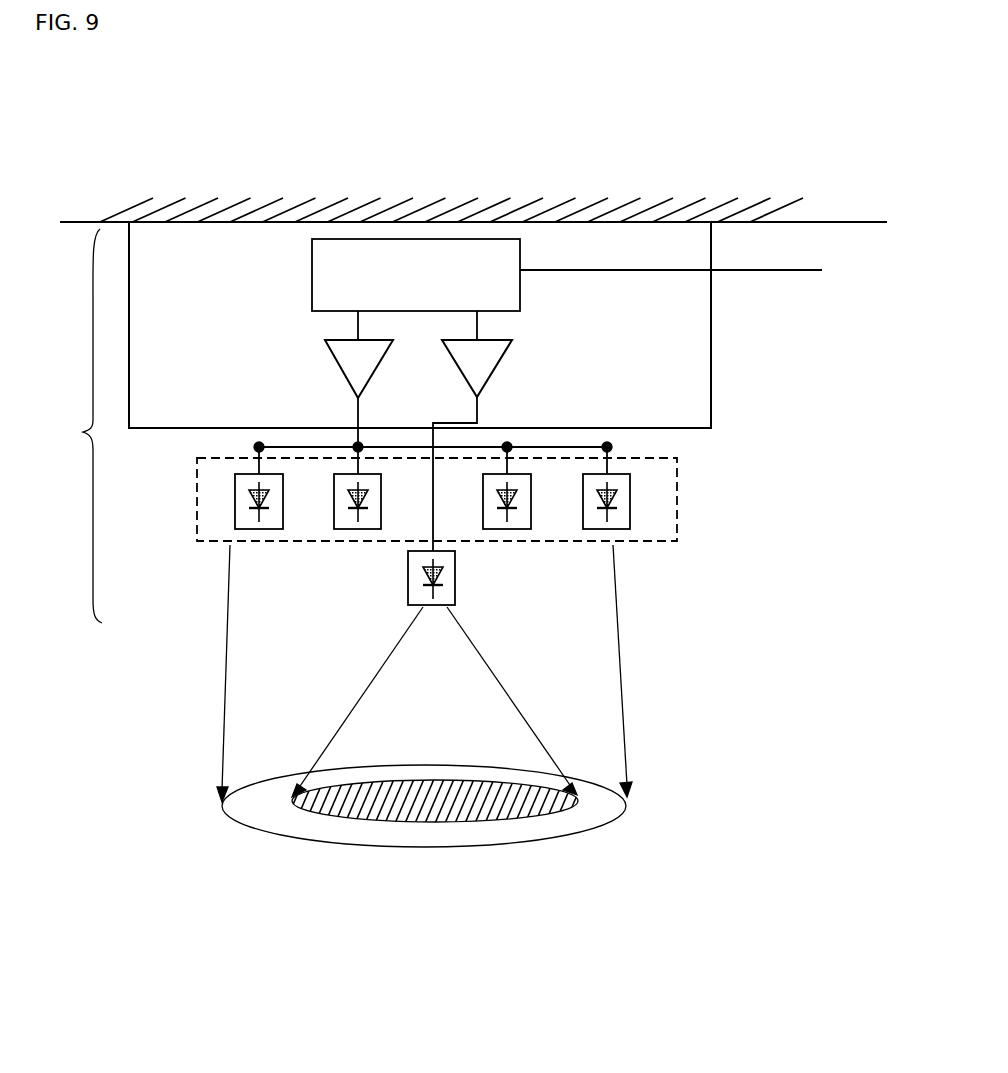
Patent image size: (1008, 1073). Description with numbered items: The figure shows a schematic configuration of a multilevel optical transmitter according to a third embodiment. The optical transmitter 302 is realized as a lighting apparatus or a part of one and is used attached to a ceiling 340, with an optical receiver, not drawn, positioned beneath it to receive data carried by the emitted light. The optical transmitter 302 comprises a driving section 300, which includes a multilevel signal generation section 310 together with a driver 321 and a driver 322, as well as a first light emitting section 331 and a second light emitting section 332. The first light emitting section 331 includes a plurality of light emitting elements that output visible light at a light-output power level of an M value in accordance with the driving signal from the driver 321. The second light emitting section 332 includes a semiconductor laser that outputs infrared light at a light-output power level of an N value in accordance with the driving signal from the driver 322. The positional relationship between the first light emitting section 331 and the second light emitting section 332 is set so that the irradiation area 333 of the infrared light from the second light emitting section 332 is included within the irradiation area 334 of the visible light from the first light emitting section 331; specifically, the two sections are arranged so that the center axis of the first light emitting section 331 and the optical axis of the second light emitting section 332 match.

The driving section 300 is at (711, 385).
The optical transmitter 302 is at (73, 426).
The multilevel signal generation section 310 is at (312, 269).
The driver 321 is at (342, 365).
The driver 322 is at (507, 355).
The first light emitting section 331 is at (677, 500).
The second light emitting section 332 is at (408, 577).
The irradiation area 333 is at (320, 816).
The irradiation area 334 is at (605, 829).
The ceiling 340 is at (860, 222).